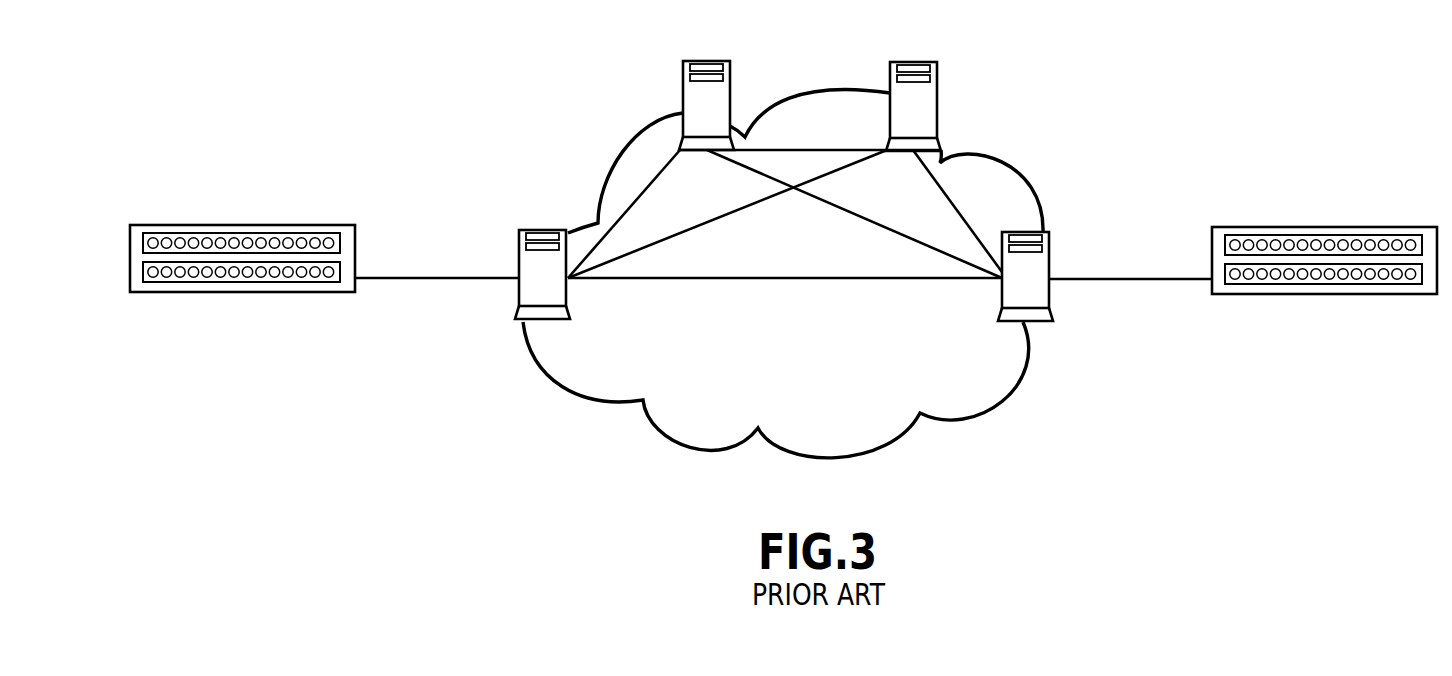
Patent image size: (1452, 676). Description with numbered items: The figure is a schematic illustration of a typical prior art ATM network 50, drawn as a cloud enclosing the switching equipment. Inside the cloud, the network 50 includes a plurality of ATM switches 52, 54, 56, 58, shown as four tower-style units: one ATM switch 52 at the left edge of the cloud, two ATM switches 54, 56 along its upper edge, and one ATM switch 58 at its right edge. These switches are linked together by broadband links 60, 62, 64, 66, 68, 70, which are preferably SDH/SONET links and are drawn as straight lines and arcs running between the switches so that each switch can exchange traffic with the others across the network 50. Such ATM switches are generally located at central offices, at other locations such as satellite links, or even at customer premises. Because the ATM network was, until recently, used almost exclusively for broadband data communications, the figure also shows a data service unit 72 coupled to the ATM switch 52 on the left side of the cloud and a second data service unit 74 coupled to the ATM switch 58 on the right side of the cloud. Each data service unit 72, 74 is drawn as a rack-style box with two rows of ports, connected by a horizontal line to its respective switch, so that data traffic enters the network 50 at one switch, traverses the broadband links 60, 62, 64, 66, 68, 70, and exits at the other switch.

The ATM network 50 is at (1003, 408).
The ATM switch 52 is at (518, 293).
The ATM switch 54 is at (732, 72).
The ATM switch 56 is at (940, 77).
The ATM switch 58 is at (1050, 265).
The broadband link 60 is at (657, 172).
The broadband link 62 is at (718, 216).
The broadband link 64 is at (786, 275).
The broadband link 66 is at (783, 150).
The broadband link 68 is at (853, 213).
The broadband link 70 is at (950, 203).
The data service unit 72 is at (242, 293).
The data service unit 74 is at (1323, 297).